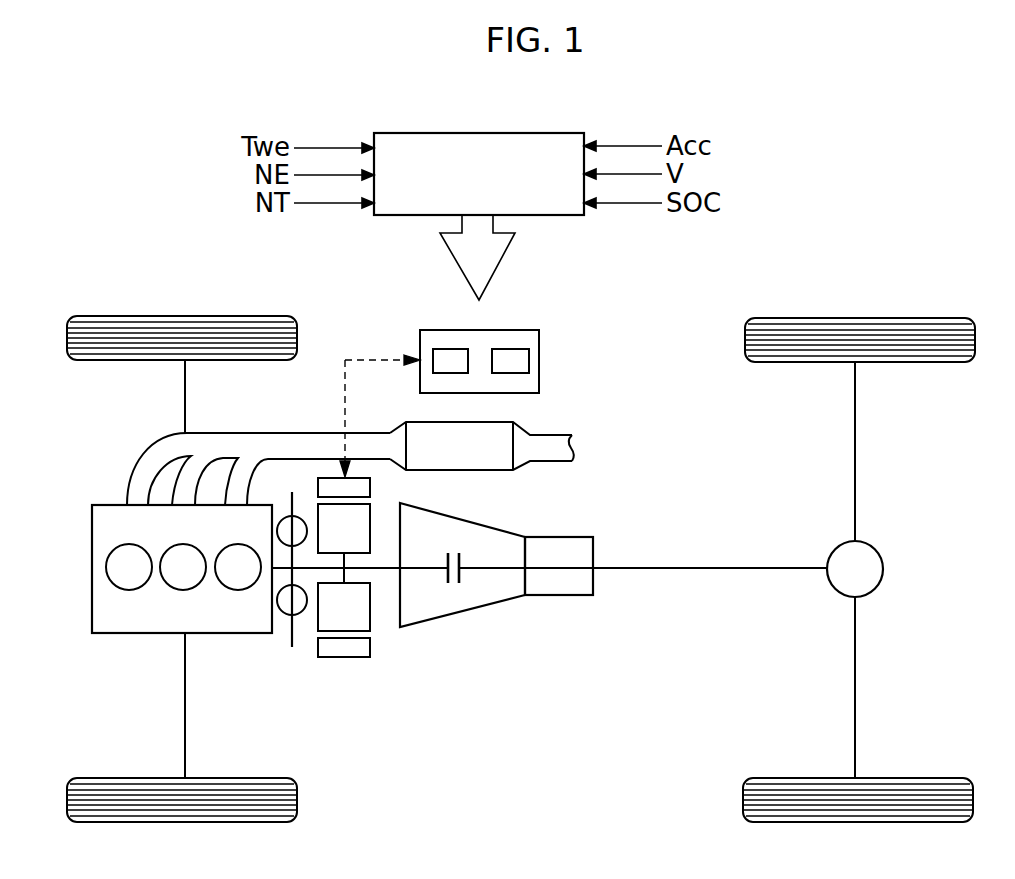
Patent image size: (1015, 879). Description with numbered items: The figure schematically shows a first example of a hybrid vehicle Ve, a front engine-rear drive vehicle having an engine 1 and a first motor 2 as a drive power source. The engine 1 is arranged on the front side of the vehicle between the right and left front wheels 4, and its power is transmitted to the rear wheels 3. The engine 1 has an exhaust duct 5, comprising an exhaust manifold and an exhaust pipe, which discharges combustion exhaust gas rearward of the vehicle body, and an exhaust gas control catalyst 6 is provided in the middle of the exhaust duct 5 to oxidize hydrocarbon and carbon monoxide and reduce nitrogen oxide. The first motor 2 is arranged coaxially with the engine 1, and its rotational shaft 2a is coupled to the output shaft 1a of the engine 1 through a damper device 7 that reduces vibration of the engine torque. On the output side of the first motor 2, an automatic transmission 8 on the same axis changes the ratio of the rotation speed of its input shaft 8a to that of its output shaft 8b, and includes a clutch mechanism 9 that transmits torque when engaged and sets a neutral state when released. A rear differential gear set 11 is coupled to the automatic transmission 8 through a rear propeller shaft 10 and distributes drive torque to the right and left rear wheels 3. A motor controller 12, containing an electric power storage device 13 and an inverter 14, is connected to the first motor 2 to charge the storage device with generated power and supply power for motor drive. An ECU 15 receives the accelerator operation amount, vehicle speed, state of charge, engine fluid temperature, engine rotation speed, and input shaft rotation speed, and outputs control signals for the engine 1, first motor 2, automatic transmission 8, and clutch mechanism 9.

The hybrid vehicle Ve is at (118, 256).
The engine 1 is at (128, 634).
The output shaft 1a is at (271, 572).
The first motor 2 is at (350, 661).
The rotational shaft 2a is at (313, 570).
The rear wheels 3 is at (862, 330).
The front wheels 4 is at (205, 330).
The exhaust duct 5 is at (214, 432).
The exhaust gas control catalyst 6 is at (470, 461).
The damper device 7 is at (289, 656).
The automatic transmission 8 is at (498, 604).
The input shaft 8a is at (413, 571).
The output shaft 8b is at (512, 573).
The clutch mechanism 9 is at (455, 591).
The rear propeller shaft 10 is at (663, 571).
The rear differential gear set 11 is at (877, 571).
The motor controller 12 is at (522, 330).
The electric power storage device 13 is at (449, 358).
The inverter 14 is at (520, 360).
The electronic control unit (ECU) 15 is at (486, 133).